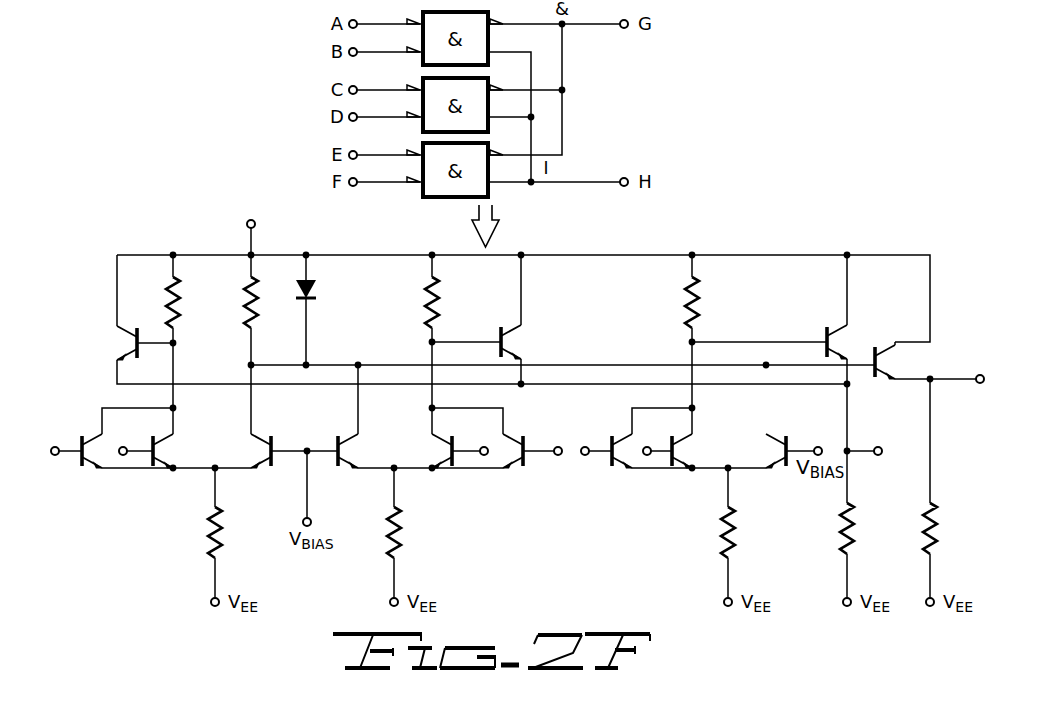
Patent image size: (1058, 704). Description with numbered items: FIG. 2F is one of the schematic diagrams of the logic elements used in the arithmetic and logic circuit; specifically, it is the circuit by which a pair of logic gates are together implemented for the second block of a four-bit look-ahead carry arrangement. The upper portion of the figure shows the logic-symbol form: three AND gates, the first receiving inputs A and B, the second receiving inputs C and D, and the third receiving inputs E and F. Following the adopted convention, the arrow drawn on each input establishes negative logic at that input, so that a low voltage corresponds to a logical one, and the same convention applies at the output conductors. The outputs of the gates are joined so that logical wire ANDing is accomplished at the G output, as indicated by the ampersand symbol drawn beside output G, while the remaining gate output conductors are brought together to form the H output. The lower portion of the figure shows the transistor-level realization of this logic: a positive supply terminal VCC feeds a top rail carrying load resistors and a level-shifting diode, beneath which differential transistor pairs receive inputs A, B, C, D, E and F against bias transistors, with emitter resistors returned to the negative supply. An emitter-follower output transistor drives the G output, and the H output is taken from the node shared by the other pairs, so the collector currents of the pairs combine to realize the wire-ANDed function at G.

The A input A is at (65, 438).
The B input B is at (134, 438).
The C input C is at (471, 438).
The D input D is at (544, 438).
The E input E is at (595, 438).
The F input F is at (656, 438).
The G output G is at (941, 365).
The H output H is at (865, 438).
The VCC supply terminal VCC is at (270, 235).